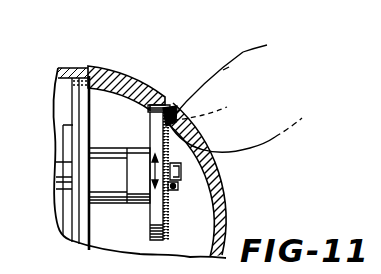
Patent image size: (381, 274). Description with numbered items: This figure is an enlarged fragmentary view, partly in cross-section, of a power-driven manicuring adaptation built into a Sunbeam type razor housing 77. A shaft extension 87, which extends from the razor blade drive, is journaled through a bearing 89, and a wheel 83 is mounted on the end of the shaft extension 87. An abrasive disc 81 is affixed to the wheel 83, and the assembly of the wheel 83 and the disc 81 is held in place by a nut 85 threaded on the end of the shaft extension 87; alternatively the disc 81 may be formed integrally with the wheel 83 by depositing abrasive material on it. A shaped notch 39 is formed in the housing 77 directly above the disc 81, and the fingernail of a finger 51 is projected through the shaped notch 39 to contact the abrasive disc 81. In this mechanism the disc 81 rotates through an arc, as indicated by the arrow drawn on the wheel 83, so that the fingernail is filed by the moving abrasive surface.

The shaped notch 39 is at (162, 104).
The finger 51 is at (243, 52).
The razor housing 77 is at (125, 78).
The abrasive disc 81 is at (165, 228).
The wheel 83 is at (148, 225).
The nut 85 is at (201, 179).
The shaft extension 87 is at (58, 170).
The bearing 89 is at (83, 116).